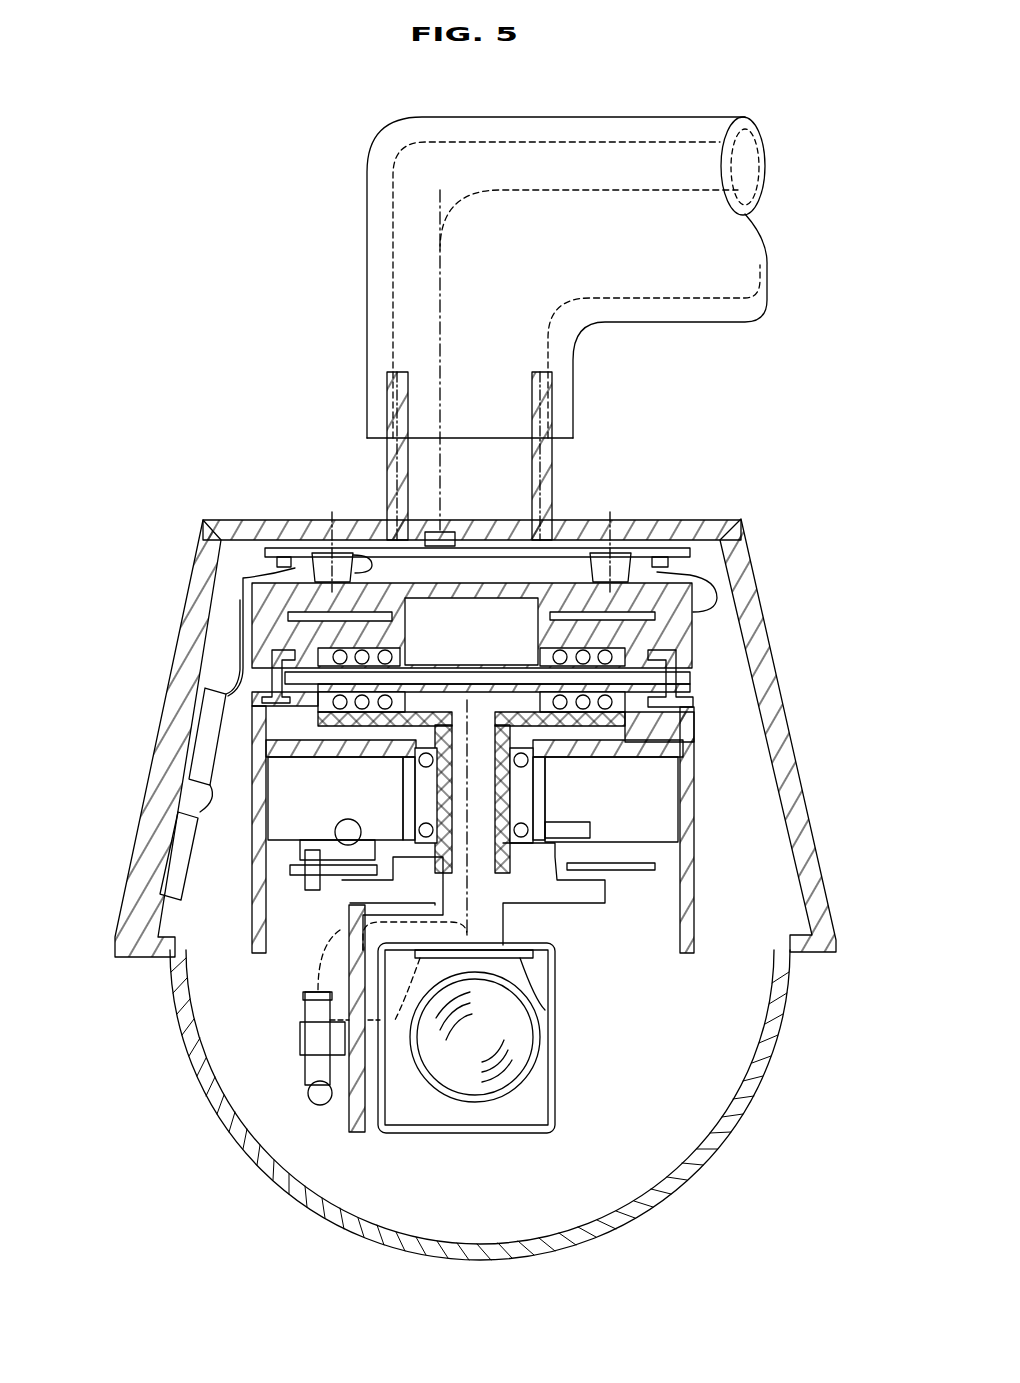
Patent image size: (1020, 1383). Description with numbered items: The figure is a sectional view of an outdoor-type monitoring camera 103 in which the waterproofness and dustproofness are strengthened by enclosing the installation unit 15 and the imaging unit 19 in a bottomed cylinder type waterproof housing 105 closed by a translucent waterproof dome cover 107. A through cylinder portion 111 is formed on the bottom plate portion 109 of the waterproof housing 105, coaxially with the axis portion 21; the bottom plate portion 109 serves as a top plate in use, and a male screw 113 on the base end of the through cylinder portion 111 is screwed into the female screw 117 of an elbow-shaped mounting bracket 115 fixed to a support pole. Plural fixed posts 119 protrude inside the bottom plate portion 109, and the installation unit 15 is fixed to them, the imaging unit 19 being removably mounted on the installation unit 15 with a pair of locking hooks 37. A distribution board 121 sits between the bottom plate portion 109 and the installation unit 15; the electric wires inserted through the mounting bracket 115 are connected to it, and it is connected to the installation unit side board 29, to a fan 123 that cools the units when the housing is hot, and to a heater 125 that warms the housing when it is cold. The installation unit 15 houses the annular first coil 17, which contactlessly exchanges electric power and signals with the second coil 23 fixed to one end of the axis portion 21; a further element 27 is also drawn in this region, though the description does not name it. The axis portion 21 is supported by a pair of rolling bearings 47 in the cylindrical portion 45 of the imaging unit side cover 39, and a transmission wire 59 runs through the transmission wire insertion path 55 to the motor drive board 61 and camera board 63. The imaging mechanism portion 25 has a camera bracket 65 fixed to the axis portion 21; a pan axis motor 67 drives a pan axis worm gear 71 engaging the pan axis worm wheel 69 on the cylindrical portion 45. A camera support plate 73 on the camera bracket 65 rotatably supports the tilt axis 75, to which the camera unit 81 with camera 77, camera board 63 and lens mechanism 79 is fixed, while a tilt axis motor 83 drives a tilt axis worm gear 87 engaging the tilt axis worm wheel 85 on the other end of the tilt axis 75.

The installation unit 15 is at (700, 625).
The first coil 17 is at (330, 652).
The imaging unit 19 is at (710, 1050).
The axis portion 21 is at (400, 780).
The second coil 23 is at (330, 702).
The imaging mechanism portion 25 is at (625, 1122).
The bearing holder 27 is at (690, 660).
The installation unit side board 29 is at (583, 575).
The locking hook 37 is at (690, 680).
The imaging unit side cover 39 is at (690, 780).
The cylindrical portion 45 is at (555, 790).
The rolling bearing 47 is at (545, 752).
The transmission wire insertion path 55 is at (530, 928).
The transmission wire 59 is at (470, 700).
The motor drive board 61 is at (290, 872).
The camera board 63 is at (505, 960).
The camera bracket 65 is at (595, 885).
The pan axis motor 67 is at (345, 945).
The pan axis worm wheel 69 is at (600, 826).
The pan axis worm gear 71 is at (345, 832).
The camera support plate 73 is at (358, 1135).
The tilt axis 75 is at (307, 1050).
The camera 77 is at (420, 1135).
The lens mechanism 79 is at (475, 1105).
The camera unit 81 is at (525, 1140).
The tilt axis motor 83 is at (343, 1060).
The tilt axis worm wheel 85 is at (307, 1008).
The tilt axis worm gear 87 is at (308, 1093).
The monitoring camera 103 is at (232, 412).
The waterproof housing 105 is at (760, 582).
The waterproof dome cover 107 is at (770, 1042).
The bottom plate portion 109 is at (725, 518).
The through cylinder portion 111 is at (553, 470).
The male screw 113 is at (555, 393).
The mounting bracket 115 is at (630, 115).
The female screw 117 is at (398, 396).
The fixed post 119 is at (370, 548).
The distribution board 121 is at (680, 556).
The fan 123 is at (205, 700).
The heater 125 is at (180, 890).